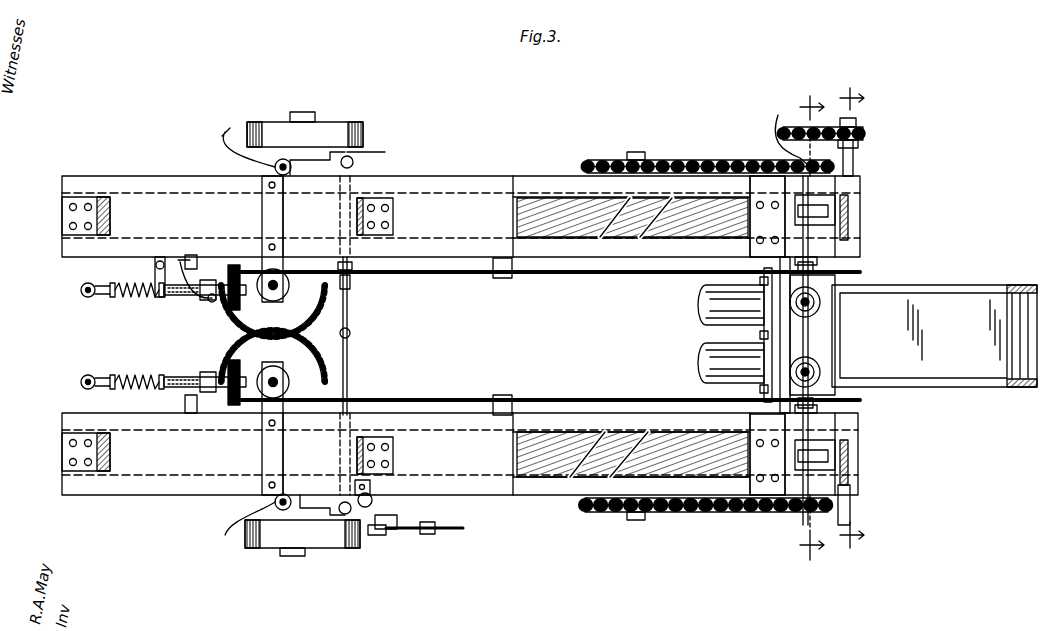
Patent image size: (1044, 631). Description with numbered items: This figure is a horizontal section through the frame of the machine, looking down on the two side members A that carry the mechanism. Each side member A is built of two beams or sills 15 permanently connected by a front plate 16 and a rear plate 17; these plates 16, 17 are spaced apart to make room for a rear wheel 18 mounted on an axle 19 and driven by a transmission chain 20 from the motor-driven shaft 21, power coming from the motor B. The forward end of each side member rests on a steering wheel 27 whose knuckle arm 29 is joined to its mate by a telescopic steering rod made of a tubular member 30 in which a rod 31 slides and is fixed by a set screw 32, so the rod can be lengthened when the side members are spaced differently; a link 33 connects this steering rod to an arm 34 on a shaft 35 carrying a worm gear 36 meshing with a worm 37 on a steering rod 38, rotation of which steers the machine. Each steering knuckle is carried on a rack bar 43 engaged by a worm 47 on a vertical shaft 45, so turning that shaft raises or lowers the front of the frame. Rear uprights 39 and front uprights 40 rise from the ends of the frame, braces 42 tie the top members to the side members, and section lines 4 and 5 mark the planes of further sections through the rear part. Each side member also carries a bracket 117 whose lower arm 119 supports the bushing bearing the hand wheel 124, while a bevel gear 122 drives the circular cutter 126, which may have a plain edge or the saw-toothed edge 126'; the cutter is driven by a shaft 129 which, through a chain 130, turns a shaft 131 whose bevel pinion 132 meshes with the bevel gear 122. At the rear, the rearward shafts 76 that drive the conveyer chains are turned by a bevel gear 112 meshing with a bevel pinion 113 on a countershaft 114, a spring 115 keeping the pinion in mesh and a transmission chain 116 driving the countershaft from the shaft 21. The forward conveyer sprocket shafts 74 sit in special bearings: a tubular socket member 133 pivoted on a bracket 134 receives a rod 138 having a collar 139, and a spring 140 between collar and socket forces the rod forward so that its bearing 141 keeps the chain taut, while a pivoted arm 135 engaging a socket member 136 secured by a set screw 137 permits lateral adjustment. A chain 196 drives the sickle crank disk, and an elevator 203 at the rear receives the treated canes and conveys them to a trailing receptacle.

The side members A is at (458, 182).
The motor B is at (700, 320).
The section line 4 is at (811, 332).
The section line 5 is at (852, 317).
The beams or sills 15 is at (545, 185).
The front plate 16 is at (482, 210).
The rear plate 17 is at (760, 190).
The rear wheels 18 is at (672, 205).
The axles 19 is at (640, 152).
The transmission chains 20 is at (722, 160).
The motor driven shaft 21 is at (816, 136).
The steering wheels 27 is at (268, 130).
The arms 29 is at (345, 155).
The tubular member 30 is at (352, 266).
The rod 31 is at (350, 325).
The set screw 32 is at (350, 282).
The rod or link 33 is at (348, 392).
The arm 34 is at (375, 488).
The shaft 35 is at (365, 508).
The worm gear 36 is at (395, 530).
The worm 37 is at (380, 536).
The steering rod 38 is at (450, 530).
The rear uprights 39 is at (848, 228).
The front uprights 40 is at (108, 208).
The braces 42 is at (393, 215).
The rack bar 43 is at (293, 180).
The vertical shaft 45 is at (275, 170).
The worm 47 is at (215, 548).
The shafts 74 is at (87, 293).
The rearward shafts 76 is at (800, 318).
The bevel gear 112 is at (812, 330).
The bevel pinion 113 is at (876, 340).
The countershaft 114 is at (835, 198).
The spring 115 is at (817, 255).
The transmission chain 116 is at (828, 212).
The bracket 117 is at (286, 256).
The lower arm 119 is at (820, 300).
The bevel gear 122 is at (310, 340).
The hand wheel 124 is at (292, 288).
The circular cutter 126 is at (375, 362).
The saw-toothed cutter teeth 126' is at (374, 310).
The shaft 129 is at (480, 276).
The chain 130 is at (230, 375).
The shaft 131 is at (230, 305).
The bevel pinion 132 is at (270, 300).
The tubular socket member 133 is at (172, 298).
The arm or bracket 134 is at (205, 258).
The pivoted arm 135 is at (162, 300).
The socket member 136 is at (157, 257).
The set screw 137 is at (182, 258).
The rod 138 is at (128, 298).
The collar 139 is at (100, 276).
The spring 140 is at (130, 375).
The bearing 141 is at (90, 378).
The chain 196 is at (850, 510).
The elevator 203 is at (958, 300).